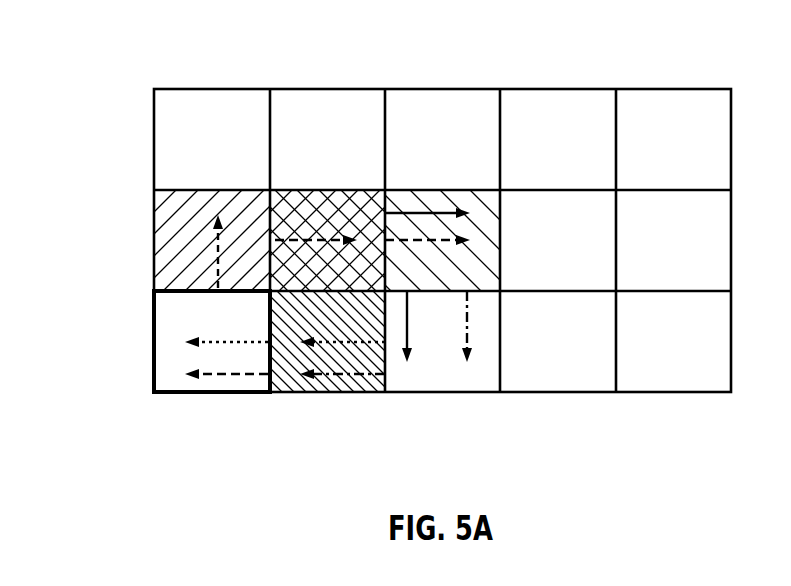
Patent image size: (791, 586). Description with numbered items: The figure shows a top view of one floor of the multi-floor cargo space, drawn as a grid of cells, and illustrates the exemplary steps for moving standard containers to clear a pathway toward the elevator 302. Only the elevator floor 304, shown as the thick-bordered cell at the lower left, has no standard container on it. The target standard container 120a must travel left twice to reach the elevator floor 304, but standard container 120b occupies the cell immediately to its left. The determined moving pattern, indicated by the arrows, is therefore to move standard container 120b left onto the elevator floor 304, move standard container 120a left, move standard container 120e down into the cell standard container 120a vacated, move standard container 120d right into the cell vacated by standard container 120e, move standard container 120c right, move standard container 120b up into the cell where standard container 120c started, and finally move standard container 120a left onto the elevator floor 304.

The standard container 120a is at (487, 367).
The standard container 120b is at (306, 390).
The standard container 120c is at (160, 226).
The standard container 120d is at (304, 198).
The standard container 120e is at (416, 197).
The elevator 302 is at (158, 389).
The elevator floor 304 is at (162, 322).